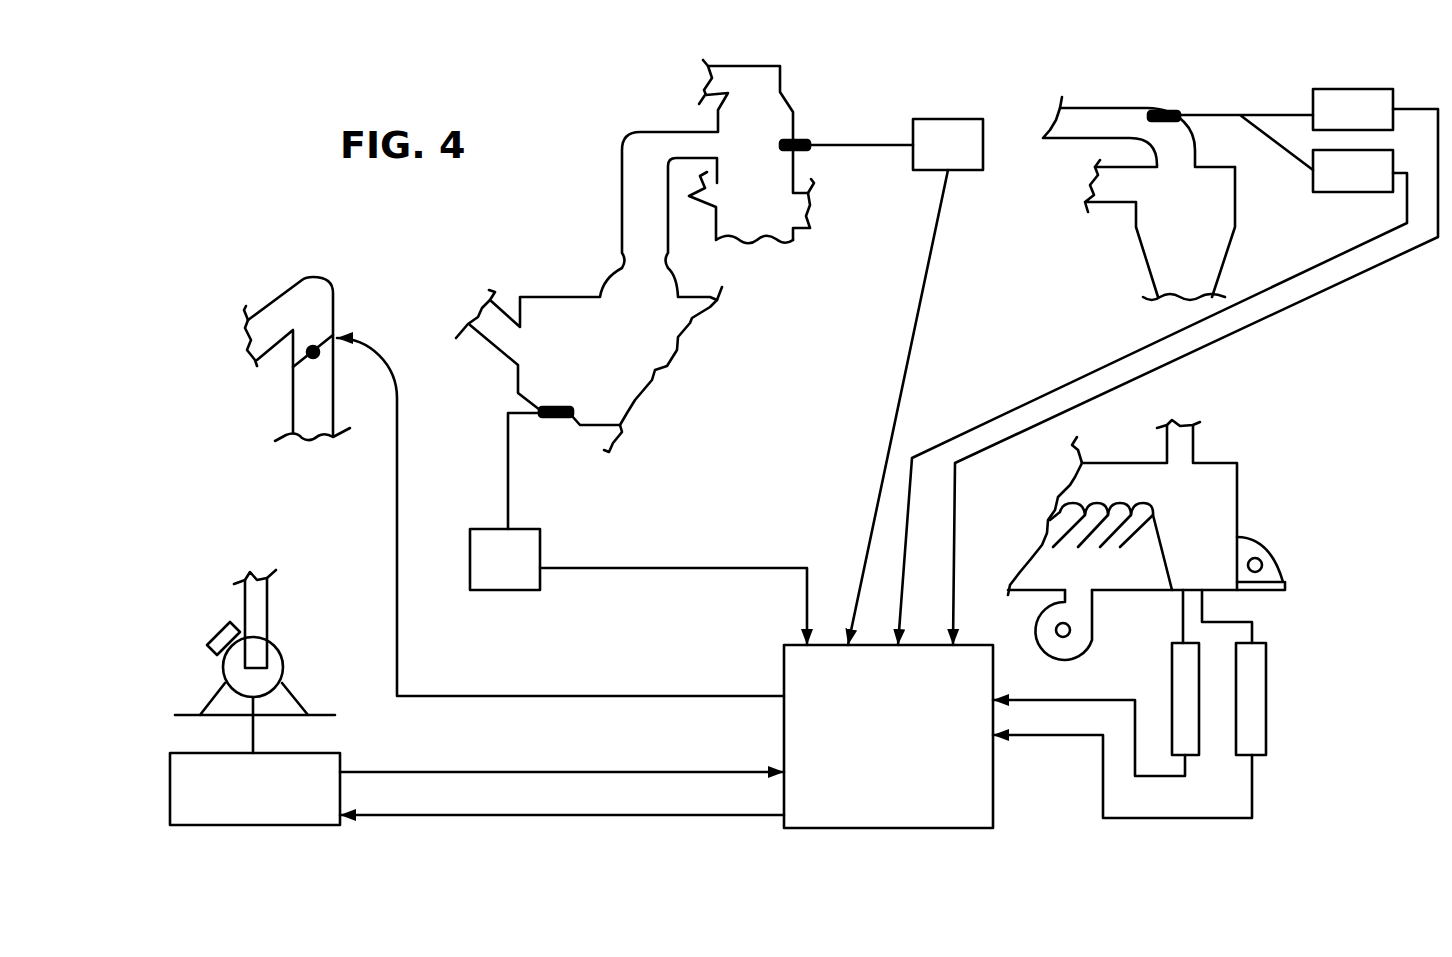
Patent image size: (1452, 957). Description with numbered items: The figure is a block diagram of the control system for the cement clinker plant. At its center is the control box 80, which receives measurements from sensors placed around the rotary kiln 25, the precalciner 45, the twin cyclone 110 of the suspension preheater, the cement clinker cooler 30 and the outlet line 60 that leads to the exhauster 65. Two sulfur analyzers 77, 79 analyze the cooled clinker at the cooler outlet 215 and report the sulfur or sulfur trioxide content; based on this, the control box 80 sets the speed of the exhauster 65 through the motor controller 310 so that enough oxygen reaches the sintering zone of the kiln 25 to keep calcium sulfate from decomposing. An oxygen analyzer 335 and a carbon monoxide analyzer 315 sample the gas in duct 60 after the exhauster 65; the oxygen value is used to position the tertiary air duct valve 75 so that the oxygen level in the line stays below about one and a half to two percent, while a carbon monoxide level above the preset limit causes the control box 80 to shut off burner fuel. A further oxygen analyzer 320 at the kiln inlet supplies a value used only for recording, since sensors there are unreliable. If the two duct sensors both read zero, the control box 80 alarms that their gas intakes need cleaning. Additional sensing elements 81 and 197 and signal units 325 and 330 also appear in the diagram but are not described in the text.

The rotary kiln 25 is at (592, 428).
The cement clinker cooler 30 is at (1237, 480).
The precalciner 45 is at (793, 110).
The outlet line 60 is at (1197, 145).
The exhauster 65 is at (277, 648).
The tertiary air duct valve 75 is at (335, 330).
The sulfur analyzer 77 is at (1172, 683).
The sulfur analyzer 79 is at (1267, 673).
The control box 80 is at (993, 787).
The exhaust sensor 81 is at (1172, 110).
The twin cyclone 110 is at (1233, 236).
The combustor sensor 197 is at (552, 404).
The cooler outlet 215 is at (1240, 592).
The motor controller 310 is at (270, 826).
The carbon monoxide analyzer 315 is at (810, 150).
The oxygen analyzer 320 is at (508, 590).
The signal conditioner 325 is at (943, 119).
The signal conditioner 330 is at (1362, 87).
The oxygen analyzer 335 is at (1342, 193).